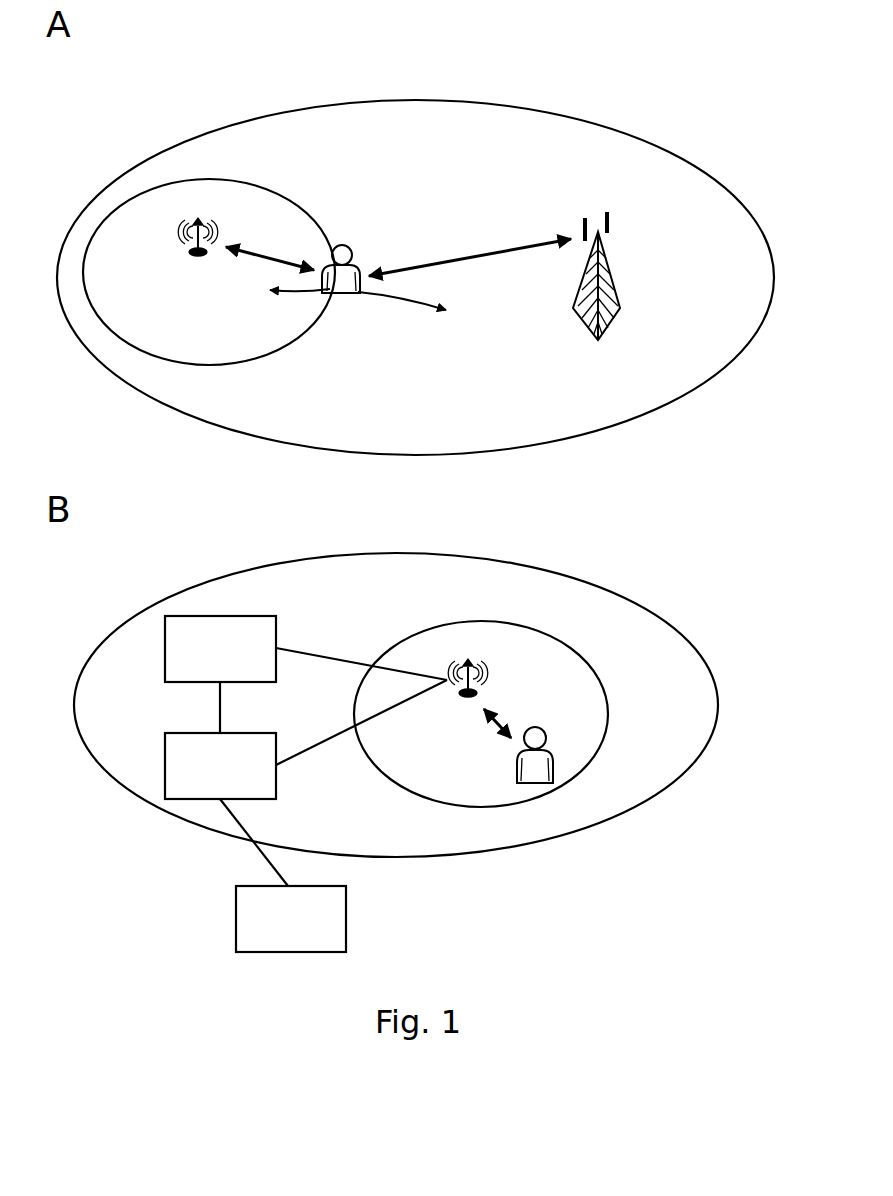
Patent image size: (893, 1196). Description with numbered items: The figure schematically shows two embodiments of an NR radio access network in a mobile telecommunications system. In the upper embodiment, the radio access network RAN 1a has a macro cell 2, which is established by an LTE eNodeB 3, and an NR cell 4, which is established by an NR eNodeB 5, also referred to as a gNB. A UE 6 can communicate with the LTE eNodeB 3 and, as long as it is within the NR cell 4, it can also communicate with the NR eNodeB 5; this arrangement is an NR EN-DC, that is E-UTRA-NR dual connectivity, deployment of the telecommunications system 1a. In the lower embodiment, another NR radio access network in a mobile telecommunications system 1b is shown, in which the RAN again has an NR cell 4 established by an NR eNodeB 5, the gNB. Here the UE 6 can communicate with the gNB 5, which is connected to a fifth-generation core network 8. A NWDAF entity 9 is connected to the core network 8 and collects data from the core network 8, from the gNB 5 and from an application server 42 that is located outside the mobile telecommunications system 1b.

The radio access network 1a is at (517, 68).
The mobile telecommunications system 1b is at (508, 556).
The macro cell 2 is at (405, 100).
The LTE eNodeB 3 is at (606, 260).
The NR cell 4 is at (283, 193).
The NR eNodeB 5 is at (213, 230).
The UE 6 is at (350, 246).
The 5G core network 8 is at (220, 649).
The NWDAF entity 9 is at (220, 766).
The application server 42 is at (291, 919).